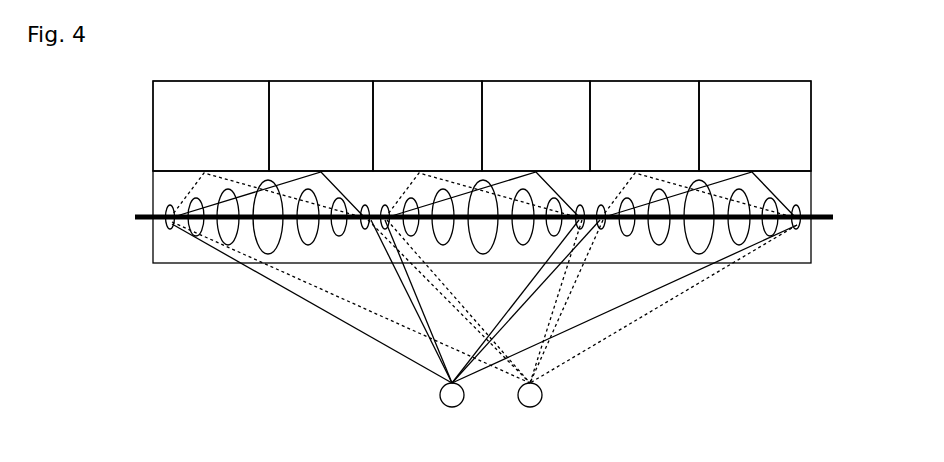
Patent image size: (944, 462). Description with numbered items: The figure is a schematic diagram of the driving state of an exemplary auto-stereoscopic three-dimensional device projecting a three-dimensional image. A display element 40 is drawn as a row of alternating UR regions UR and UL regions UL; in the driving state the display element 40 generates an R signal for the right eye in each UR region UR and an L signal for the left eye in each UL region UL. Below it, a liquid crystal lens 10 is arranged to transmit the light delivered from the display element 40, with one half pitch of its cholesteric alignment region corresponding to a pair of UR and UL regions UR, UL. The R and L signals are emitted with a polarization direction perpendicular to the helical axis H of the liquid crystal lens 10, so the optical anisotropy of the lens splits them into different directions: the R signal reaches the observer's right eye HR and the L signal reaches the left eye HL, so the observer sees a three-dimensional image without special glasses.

The display element 40 is at (514, 126).
The liquid crystal lens 10 is at (805, 195).
The helical axis H is at (473, 218).
The left eye HL is at (484, 327).
The right eye HR is at (484, 327).
The UR region UR is at (426, 126).
The UL region UL is at (540, 126).